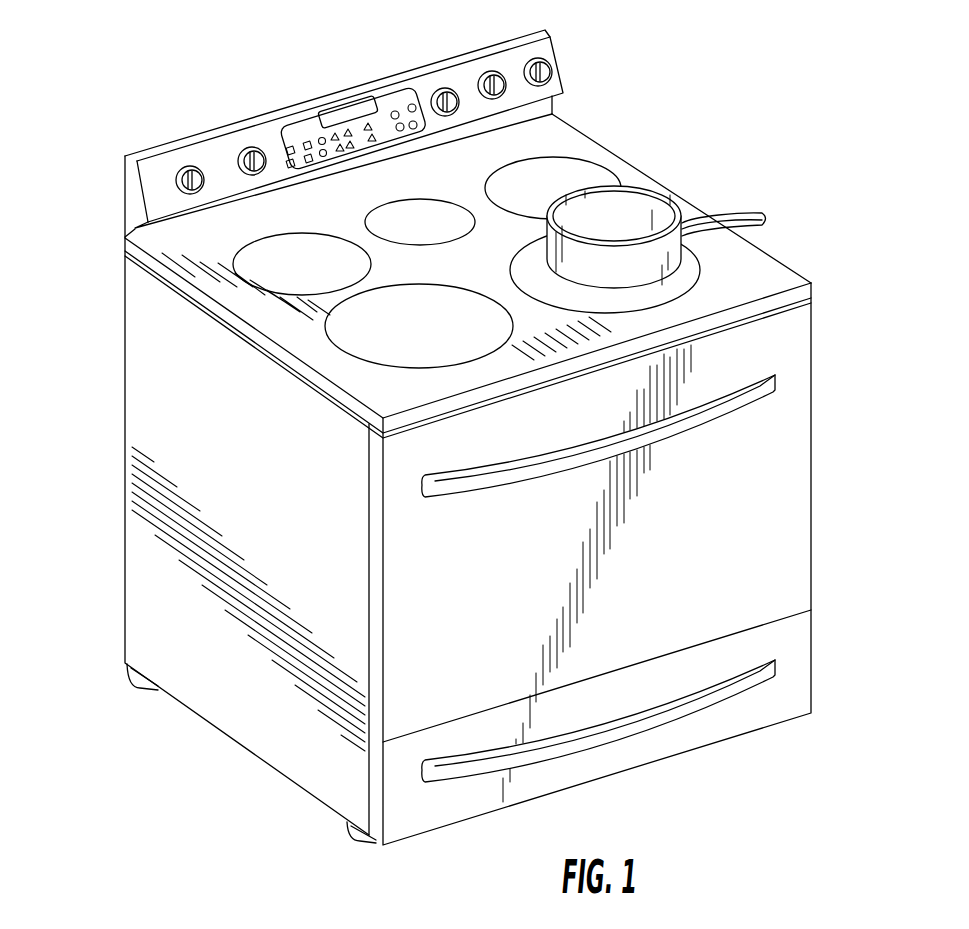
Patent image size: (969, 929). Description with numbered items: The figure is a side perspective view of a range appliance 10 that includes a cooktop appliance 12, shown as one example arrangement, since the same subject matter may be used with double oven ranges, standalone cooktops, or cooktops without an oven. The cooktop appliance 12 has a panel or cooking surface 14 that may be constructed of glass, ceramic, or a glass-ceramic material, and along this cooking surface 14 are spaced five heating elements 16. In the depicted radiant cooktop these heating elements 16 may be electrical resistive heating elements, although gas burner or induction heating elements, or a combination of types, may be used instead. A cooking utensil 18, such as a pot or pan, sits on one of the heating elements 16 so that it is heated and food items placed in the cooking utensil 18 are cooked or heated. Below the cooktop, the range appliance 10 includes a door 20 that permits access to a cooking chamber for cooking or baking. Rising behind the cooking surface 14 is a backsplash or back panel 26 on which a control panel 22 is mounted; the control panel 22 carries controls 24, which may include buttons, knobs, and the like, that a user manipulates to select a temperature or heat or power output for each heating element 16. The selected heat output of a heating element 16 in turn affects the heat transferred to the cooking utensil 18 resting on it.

The range appliance 10 is at (128, 85).
The cooktop appliance 12 is at (632, 94).
The cooking surface 14 is at (298, 326).
The heating elements 16 is at (600, 177).
The cooking utensil 18 is at (647, 207).
The door 20 is at (767, 277).
The control panel 22 is at (465, 77).
The controls 24 is at (410, 107).
The backsplash 26 is at (133, 200).